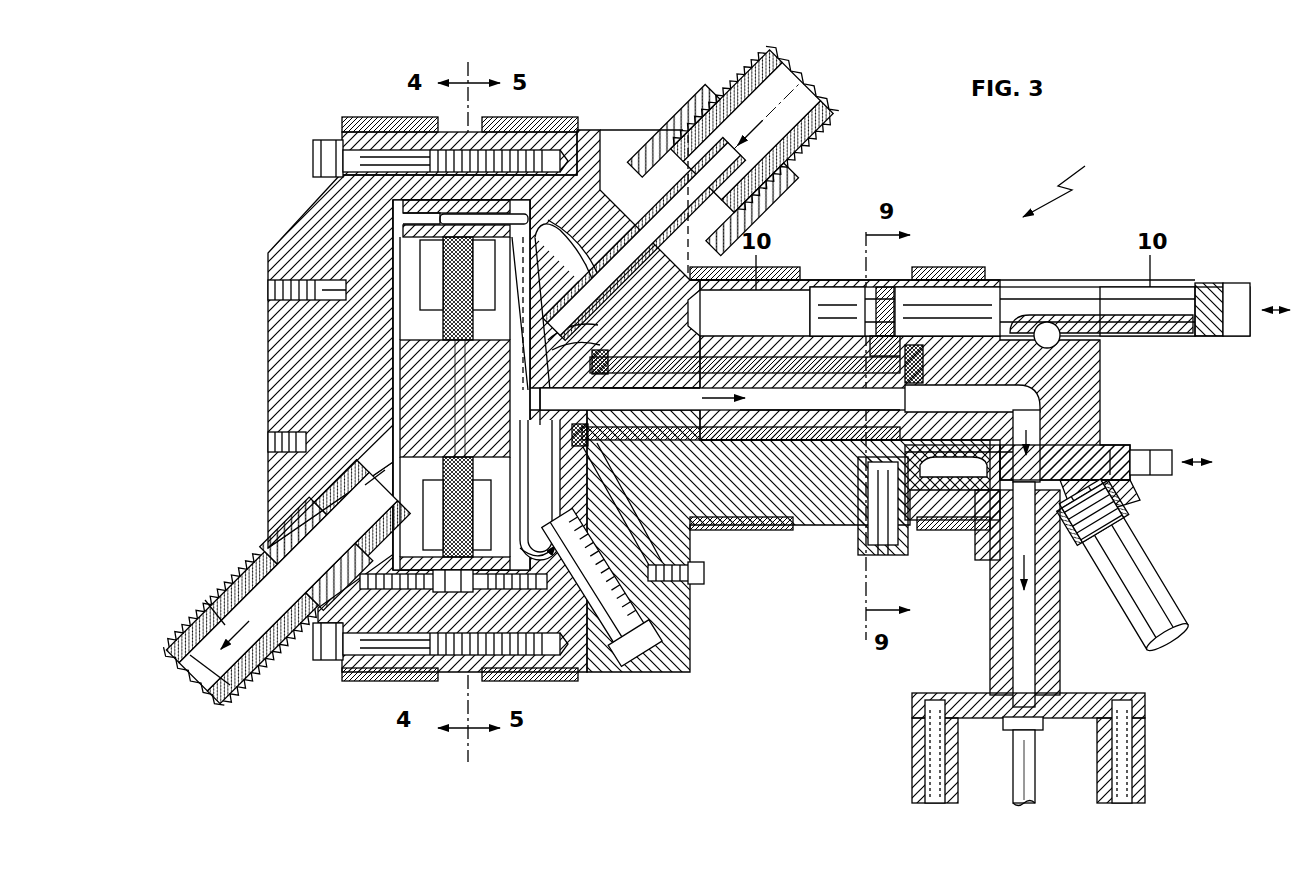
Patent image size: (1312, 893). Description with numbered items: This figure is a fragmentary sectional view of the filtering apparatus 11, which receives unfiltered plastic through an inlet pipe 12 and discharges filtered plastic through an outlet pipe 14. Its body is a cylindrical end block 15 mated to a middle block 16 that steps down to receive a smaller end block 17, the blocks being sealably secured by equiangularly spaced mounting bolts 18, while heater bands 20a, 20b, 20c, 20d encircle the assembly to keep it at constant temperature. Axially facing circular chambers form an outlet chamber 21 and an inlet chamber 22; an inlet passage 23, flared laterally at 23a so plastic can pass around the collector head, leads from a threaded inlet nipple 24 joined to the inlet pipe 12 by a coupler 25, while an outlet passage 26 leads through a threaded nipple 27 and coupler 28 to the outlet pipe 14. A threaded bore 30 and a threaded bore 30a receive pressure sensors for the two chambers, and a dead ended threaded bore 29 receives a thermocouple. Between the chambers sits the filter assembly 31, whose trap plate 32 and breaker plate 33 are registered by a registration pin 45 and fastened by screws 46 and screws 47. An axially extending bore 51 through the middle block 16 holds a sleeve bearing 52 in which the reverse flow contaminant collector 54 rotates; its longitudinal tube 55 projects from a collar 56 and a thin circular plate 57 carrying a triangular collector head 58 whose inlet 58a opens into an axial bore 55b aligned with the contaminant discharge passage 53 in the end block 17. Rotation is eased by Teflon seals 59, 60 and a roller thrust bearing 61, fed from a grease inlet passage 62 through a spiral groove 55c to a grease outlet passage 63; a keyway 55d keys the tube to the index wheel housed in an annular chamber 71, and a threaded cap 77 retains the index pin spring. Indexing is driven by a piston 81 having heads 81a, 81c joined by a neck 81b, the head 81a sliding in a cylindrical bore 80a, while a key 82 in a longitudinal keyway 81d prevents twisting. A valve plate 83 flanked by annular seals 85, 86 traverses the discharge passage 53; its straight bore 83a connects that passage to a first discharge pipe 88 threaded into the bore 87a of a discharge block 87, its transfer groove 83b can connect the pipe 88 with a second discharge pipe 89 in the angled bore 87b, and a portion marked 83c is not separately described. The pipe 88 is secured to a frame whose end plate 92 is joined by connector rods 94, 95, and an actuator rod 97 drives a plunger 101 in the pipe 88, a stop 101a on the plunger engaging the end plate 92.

The filtering apparatus 11 is at (1062, 180).
The inlet pipe 12 is at (746, 82).
The outlet pipe 14 is at (228, 685).
The end block 15 is at (300, 232).
The middle block 16 is at (692, 634).
The end block 17 is at (1102, 391).
The mounting bolts 18 is at (312, 160).
The heater band 20a is at (372, 682).
The heater band 20b is at (545, 682).
The heater band 20c is at (745, 532).
The heater band 20d is at (945, 532).
The outlet chamber 21 is at (398, 438).
The inlet chamber 22 is at (545, 546).
The inlet passage 23 is at (640, 228).
The lateral flare 23a is at (583, 272).
The threaded inlet nipple 24 is at (724, 210).
The coupler 25 is at (698, 112).
The outlet passage 26 is at (382, 520).
The threaded nipple 27 is at (272, 560).
The coupler 28 is at (214, 612).
The dead ended threaded bore 29 is at (268, 444).
The threaded bore 30 is at (600, 662).
The threaded bore 30a is at (268, 290).
The filter assembly 31 is at (412, 318).
The trap plate 32 is at (505, 483).
The breaker plate 33 is at (434, 483).
The registration pin 45 is at (505, 222).
The screws 46 is at (518, 583).
The screws 47 is at (378, 580).
The axially extending bore 51 is at (698, 440).
The sleeve bearing 52 is at (844, 314).
The contaminant discharge passage 53 is at (975, 407).
The reverse flow contaminant collector 54 is at (516, 340).
The longitudinal tube 55 is at (822, 440).
The axial bore 55b is at (684, 409).
The spiral groove 55c is at (780, 400).
The keyway 55d is at (860, 400).
The collar 56 is at (552, 425).
The circular plate 57 is at (545, 512).
The collector head 58 is at (527, 270).
The inlet 58a is at (556, 338).
The Teflon seal 59 is at (580, 440).
The Teflon seal 60 is at (912, 365).
The roller thrust bearing 61 is at (608, 372).
The grease inlet passage 62 is at (660, 552).
The grease outlet passage 63 is at (822, 345).
The annular chamber 71 is at (880, 335).
The threaded cap 77 is at (860, 525).
The cylindrical bore 80a is at (780, 310).
The piston 81 is at (1050, 305).
The cylindrical head 81a is at (823, 308).
The neck 81b is at (935, 305).
The cylindrical head 81c is at (1175, 300).
The longitudinal keyway 81d is at (1142, 333).
The key 82 is at (1045, 324).
The valve plate 83 is at (1172, 474).
The straight bore 83a is at (1048, 468).
The transfer groove 83b is at (950, 465).
The rod end 83c is at (1128, 462).
The annular seal 85 is at (1040, 446).
The annular seal 86 is at (996, 480).
The discharge block 87 is at (1112, 486).
The first threaded bore 87a is at (978, 522).
The second threaded bore 87b is at (1112, 510).
The first contaminant discharge pipe 88 is at (990, 612).
The second discharge pipe 89 is at (1135, 558).
The end plate 92 is at (970, 695).
The connector rod 94 is at (1145, 740).
The connector rod 95 is at (912, 740).
The actuator rod 97 is at (1034, 778).
The plunger 101 is at (1025, 640).
The stop 101a is at (1010, 728).